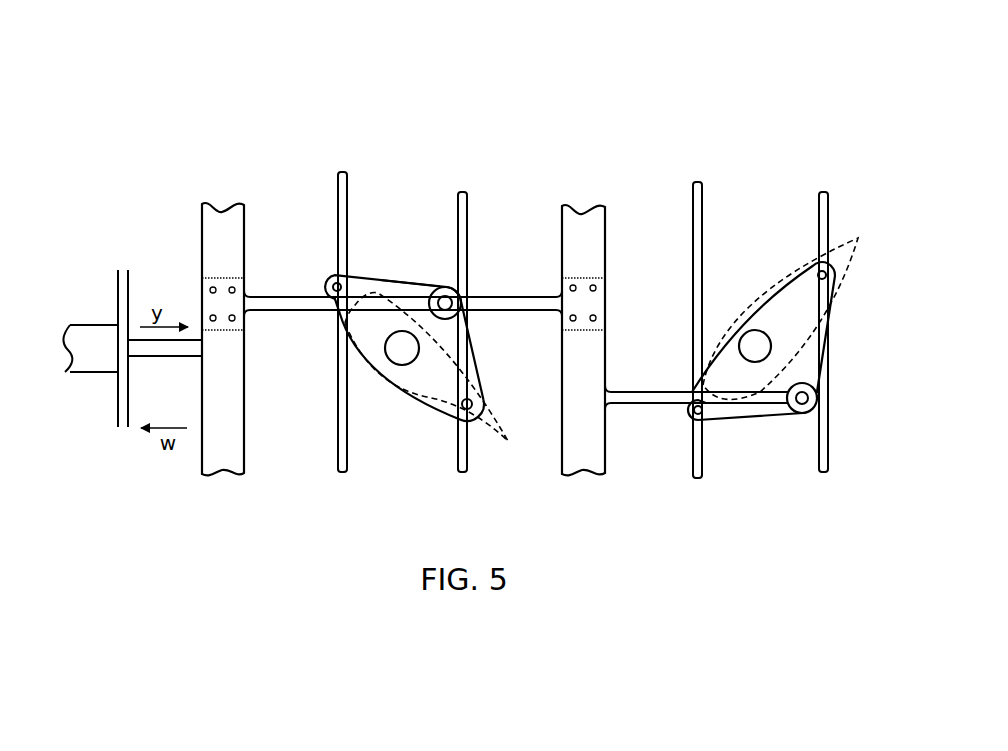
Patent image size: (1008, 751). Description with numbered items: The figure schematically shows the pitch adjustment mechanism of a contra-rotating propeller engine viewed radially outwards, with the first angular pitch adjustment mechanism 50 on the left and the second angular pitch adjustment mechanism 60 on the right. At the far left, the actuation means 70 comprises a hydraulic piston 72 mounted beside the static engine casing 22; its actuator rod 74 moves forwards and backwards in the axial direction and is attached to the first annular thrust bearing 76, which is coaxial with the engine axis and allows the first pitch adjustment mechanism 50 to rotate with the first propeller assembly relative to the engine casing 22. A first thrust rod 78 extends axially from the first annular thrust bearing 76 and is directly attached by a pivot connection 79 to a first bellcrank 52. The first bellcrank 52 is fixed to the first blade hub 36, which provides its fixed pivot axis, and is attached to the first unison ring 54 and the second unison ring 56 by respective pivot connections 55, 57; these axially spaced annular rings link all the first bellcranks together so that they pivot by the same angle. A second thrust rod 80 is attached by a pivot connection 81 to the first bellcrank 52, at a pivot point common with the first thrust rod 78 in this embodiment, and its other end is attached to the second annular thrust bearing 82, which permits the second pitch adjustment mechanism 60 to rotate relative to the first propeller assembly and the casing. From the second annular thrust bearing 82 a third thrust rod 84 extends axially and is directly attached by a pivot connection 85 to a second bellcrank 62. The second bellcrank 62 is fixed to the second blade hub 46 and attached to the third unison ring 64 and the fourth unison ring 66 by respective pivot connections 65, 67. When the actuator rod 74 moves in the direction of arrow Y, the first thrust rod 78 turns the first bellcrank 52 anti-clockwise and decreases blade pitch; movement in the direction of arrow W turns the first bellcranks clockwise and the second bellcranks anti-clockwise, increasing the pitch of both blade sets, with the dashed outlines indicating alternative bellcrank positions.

The first angular pitch adjustment mechanism 50 is at (436, 62).
The second angular pitch adjustment mechanism 60 is at (788, 112).
The actuation means 70 is at (91, 250).
The hydraulic piston 72 is at (96, 360).
The static engine casing 22 is at (130, 280).
The actuator rod 74 is at (155, 352).
The first annular thrust bearing 76 is at (223, 225).
The first thrust rod 78 is at (285, 312).
The second thrust rod 80 is at (500, 298).
The first unison ring 54 is at (345, 185).
The second unison ring 56 is at (468, 212).
The first bellcrank 52 is at (433, 387).
The pivot connection 79 is at (430, 287).
The pivot connection 55 is at (333, 280).
The pivot connection 81 is at (445, 298).
The pivot connection 57 is at (472, 402).
The first blade hub 36 is at (400, 350).
The second annular thrust bearing 82 is at (582, 218).
The third thrust rod 84 is at (632, 394).
The third unison ring 64 is at (704, 200).
The fourth unison ring 66 is at (818, 222).
The second bellcrank 62 is at (735, 413).
The pivot connection 67 is at (812, 270).
The second blade hub 46 is at (756, 338).
The pivot connection 65 is at (691, 414).
The pivot connection 85 is at (802, 405).